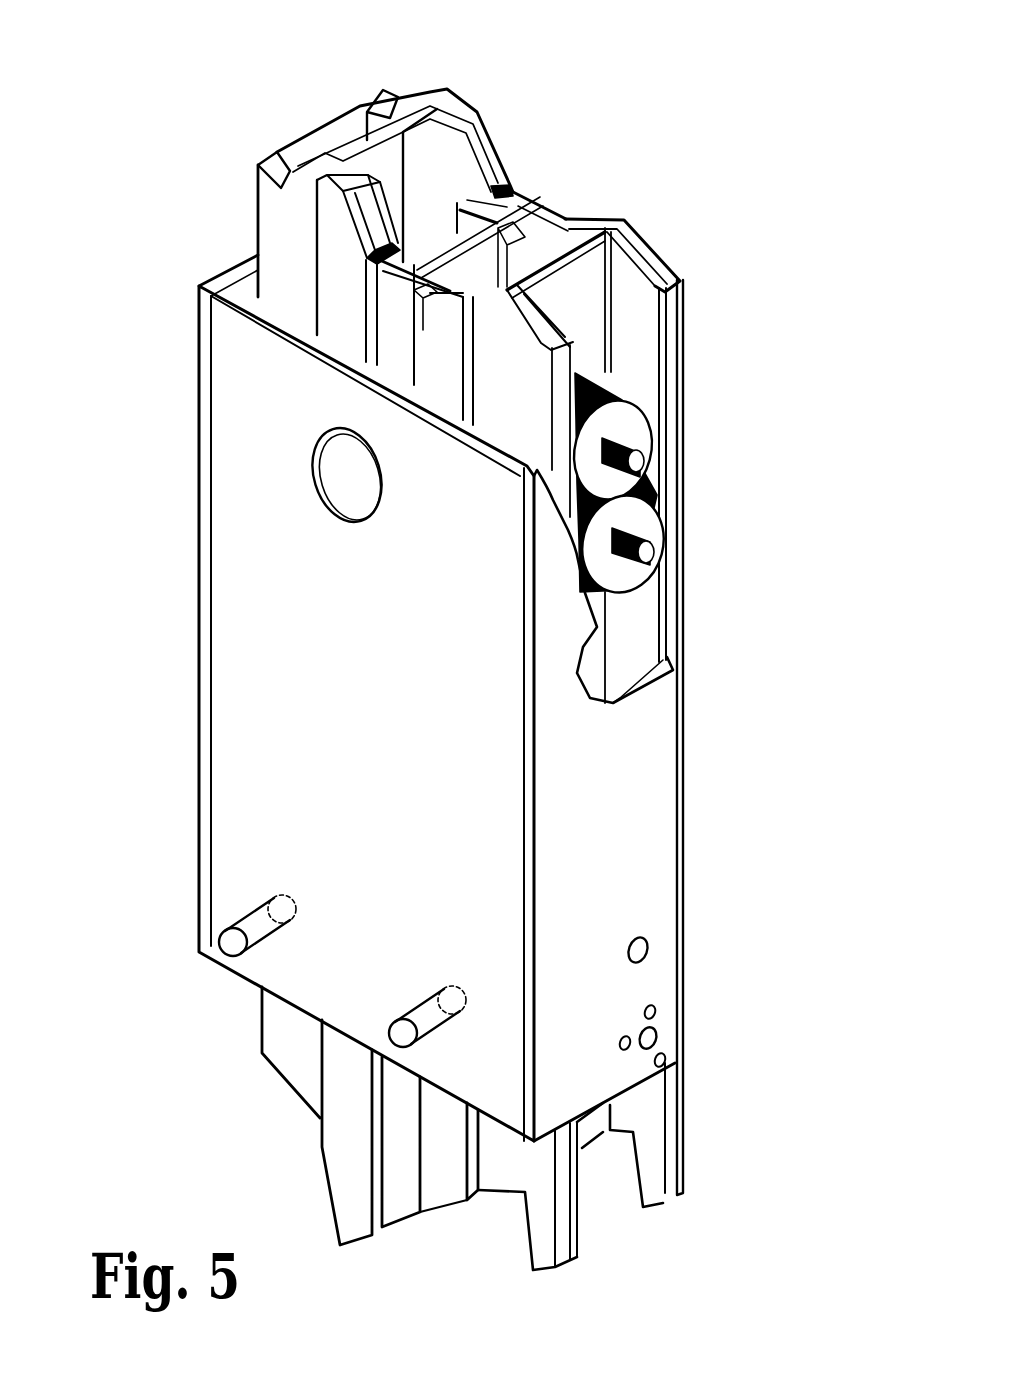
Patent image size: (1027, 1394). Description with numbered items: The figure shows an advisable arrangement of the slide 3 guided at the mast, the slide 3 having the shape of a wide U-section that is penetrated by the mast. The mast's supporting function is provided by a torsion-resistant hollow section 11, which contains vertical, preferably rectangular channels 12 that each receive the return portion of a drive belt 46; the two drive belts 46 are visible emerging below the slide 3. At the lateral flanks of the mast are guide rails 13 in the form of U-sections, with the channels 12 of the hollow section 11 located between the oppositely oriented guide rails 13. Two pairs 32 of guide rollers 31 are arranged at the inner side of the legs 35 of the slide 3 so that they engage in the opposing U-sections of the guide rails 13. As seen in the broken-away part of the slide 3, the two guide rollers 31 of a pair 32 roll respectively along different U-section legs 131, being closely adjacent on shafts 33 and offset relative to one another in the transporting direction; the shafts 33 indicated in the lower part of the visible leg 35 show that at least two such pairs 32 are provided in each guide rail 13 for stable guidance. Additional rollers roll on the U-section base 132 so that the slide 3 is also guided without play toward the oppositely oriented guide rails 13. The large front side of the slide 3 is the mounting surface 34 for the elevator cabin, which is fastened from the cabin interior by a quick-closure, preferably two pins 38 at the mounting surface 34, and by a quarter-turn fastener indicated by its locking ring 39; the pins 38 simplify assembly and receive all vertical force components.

The slide 3 is at (452, 653).
The hollow section 11 is at (590, 230).
The channels 12 is at (473, 267).
The guide rails 13 is at (275, 163).
The guide rollers 31 is at (628, 410).
The pairs of guide rollers 32 is at (647, 513).
The shafts 33 is at (650, 557).
The mounting surface 34 is at (312, 713).
The legs 35 is at (630, 770).
The pins 38 is at (433, 997).
The locking ring 39 is at (312, 477).
The drive belts 46 is at (447, 1177).
The U-section legs 131 is at (590, 332).
The U-section base 132 is at (612, 317).